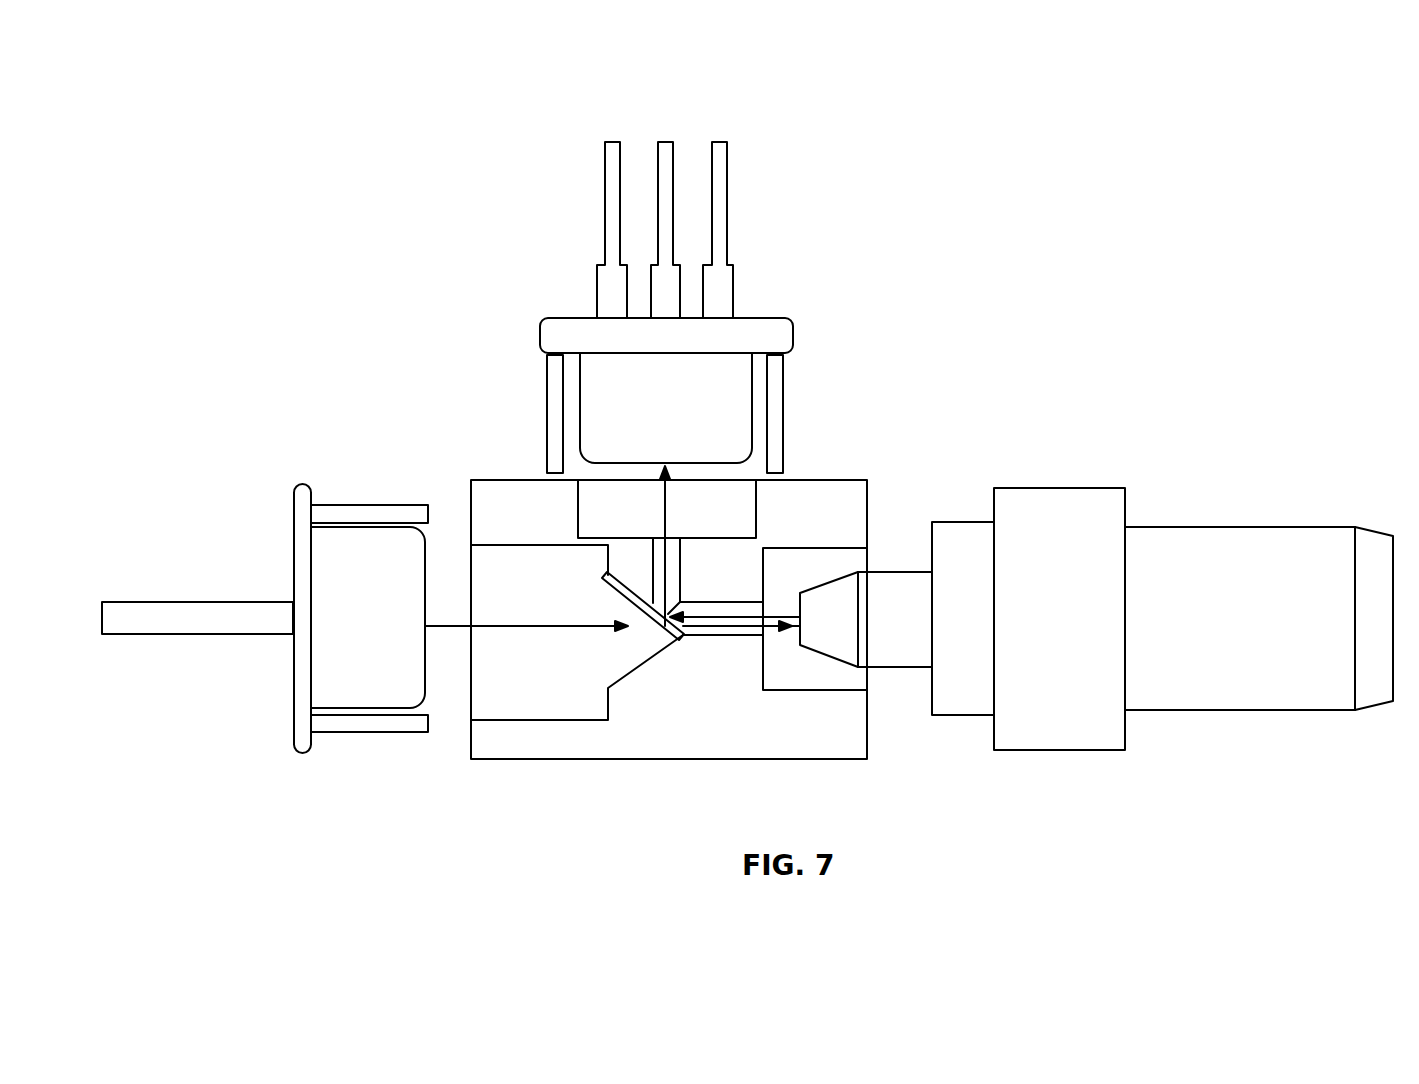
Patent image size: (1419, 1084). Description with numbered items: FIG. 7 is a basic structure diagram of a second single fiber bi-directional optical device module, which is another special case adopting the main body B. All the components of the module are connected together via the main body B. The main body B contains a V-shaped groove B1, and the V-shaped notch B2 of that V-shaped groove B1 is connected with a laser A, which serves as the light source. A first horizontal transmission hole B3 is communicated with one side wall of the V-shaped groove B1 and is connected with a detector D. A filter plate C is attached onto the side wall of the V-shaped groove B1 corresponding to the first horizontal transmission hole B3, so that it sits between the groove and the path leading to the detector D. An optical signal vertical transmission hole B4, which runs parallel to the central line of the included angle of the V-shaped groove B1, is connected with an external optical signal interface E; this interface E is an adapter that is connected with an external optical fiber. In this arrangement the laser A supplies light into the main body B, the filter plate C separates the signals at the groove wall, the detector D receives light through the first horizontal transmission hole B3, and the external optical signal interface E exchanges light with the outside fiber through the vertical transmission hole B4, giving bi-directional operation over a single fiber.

The laser A is at (375, 580).
The main body B is at (723, 725).
The V-shaped groove B1 is at (619, 687).
The V-shaped notch B2 is at (498, 543).
The first horizontal transmission hole B3 is at (668, 577).
The optical signal vertical transmission hole B4 is at (745, 622).
The filter plate C is at (618, 600).
The detector D is at (722, 370).
The external optical signal interface E is at (1041, 565).